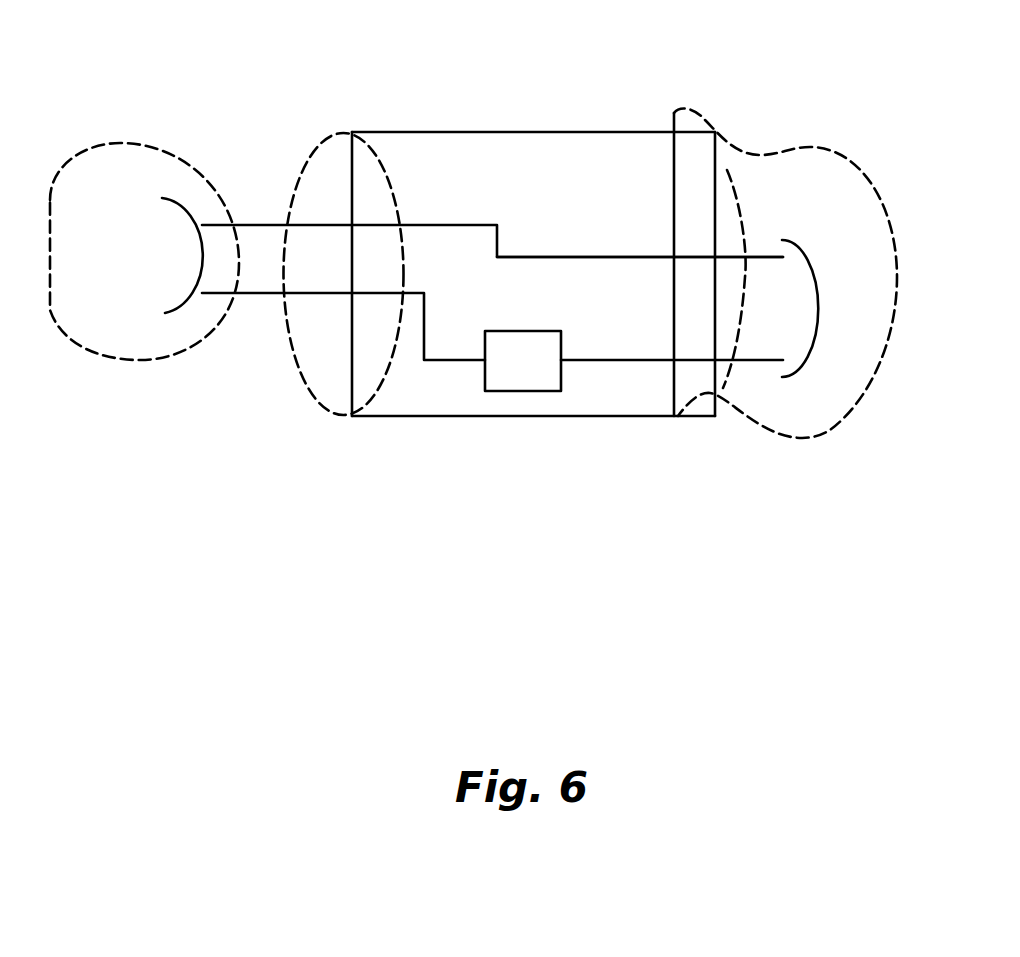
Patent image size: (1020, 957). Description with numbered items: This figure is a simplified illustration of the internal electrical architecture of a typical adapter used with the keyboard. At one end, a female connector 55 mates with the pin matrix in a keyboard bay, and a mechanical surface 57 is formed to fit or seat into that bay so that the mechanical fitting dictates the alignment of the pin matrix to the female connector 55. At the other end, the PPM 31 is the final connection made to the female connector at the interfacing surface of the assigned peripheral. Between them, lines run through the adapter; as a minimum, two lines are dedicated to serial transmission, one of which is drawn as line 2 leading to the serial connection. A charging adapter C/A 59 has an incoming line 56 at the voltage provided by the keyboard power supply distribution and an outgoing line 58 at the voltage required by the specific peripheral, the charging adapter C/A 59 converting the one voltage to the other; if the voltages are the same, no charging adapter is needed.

The serial data line 2 is at (540, 263).
The PPM 31 is at (752, 353).
The female connector 55 is at (170, 258).
The incoming line 56 is at (272, 293).
The mechanical surface 57 is at (437, 132).
The outgoing line 58 is at (627, 360).
The charging adapter C/A 59 is at (530, 392).